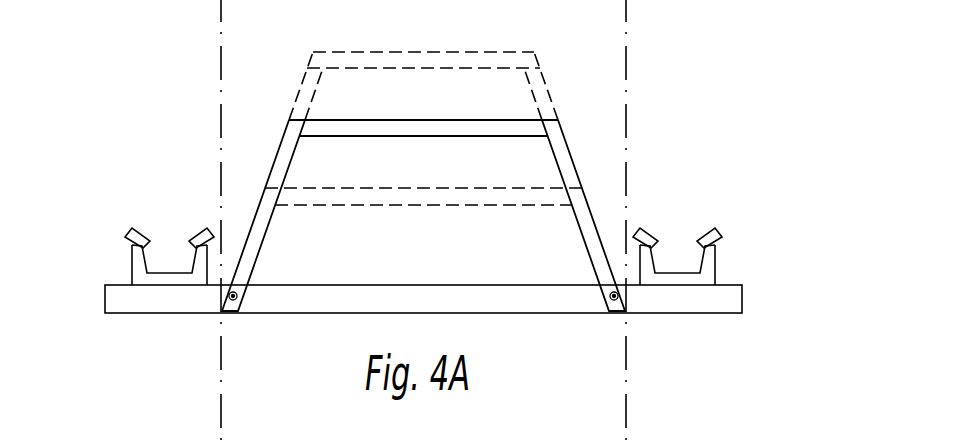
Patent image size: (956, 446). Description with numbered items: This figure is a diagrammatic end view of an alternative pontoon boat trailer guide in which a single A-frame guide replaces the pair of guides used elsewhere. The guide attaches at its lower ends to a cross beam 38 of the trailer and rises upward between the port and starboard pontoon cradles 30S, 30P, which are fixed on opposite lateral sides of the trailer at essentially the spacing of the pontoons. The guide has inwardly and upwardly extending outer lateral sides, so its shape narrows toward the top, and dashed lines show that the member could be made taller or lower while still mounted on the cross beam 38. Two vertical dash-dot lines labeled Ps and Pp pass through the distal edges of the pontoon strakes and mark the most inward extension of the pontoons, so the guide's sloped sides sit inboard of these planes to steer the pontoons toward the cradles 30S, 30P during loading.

The cross beam 38 is at (408, 289).
The starboard pontoon cradle 30S is at (131, 263).
The port pontoon cradle 30P is at (716, 263).
The starboard vertical plane Ps is at (220, 8).
The port vertical plane Pp is at (627, 12).